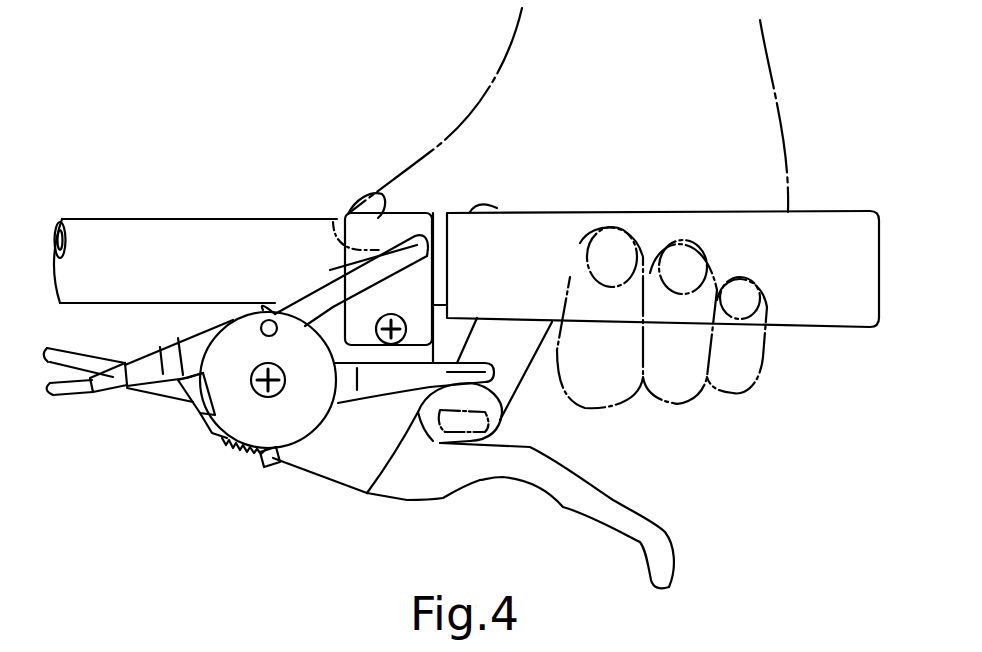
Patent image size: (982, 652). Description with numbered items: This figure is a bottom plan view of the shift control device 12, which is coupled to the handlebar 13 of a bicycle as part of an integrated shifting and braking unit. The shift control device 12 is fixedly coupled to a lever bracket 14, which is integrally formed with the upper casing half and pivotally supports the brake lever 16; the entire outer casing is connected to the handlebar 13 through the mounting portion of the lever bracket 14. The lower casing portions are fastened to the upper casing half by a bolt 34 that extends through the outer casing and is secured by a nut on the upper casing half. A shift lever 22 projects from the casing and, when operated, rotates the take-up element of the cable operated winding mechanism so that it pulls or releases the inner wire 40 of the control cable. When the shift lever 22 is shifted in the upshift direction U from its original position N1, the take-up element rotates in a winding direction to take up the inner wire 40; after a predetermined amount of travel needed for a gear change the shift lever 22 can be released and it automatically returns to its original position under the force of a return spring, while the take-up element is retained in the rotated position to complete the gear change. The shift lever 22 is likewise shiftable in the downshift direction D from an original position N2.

The shift control device 12 is at (248, 465).
The handlebar 13 is at (163, 220).
The lever bracket 14 is at (353, 487).
The brake lever 16 is at (545, 482).
The shift lever 22 is at (327, 278).
The bolt 34 is at (292, 402).
The inner wire 40 is at (73, 392).
The original position N1 is at (418, 245).
The original position N2 is at (490, 374).
The upshift direction U is at (527, 193).
The downshift direction D is at (578, 376).